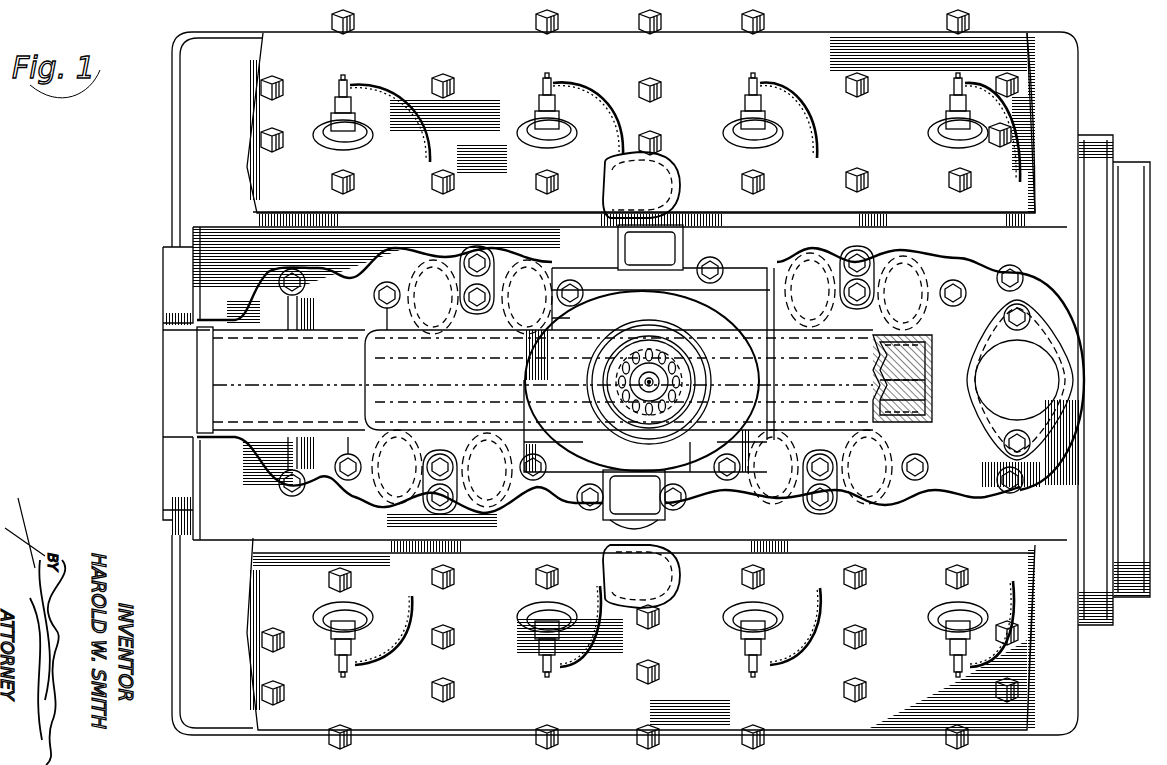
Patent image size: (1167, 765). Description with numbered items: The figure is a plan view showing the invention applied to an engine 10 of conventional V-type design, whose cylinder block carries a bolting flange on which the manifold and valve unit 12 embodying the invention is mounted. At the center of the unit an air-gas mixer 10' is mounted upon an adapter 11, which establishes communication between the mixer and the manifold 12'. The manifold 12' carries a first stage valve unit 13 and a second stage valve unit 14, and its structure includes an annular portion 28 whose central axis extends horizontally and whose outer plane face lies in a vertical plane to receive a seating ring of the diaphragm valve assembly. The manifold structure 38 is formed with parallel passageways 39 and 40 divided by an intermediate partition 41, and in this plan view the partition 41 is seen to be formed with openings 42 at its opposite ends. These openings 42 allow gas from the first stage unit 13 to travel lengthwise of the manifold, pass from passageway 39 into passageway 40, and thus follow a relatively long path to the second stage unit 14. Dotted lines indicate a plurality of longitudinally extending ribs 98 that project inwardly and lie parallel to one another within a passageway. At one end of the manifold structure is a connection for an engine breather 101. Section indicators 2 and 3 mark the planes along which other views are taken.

The internal combustion engine 10 is at (589, 179).
The manifold 12' is at (610, 374).
The adapter 11 is at (590, 265).
The first stage valve unit 13 is at (650, 236).
The air-gas mixer 10' is at (642, 381).
The ribs 98 is at (660, 350).
The annular portion 28 is at (778, 378).
The openings 42 is at (392, 383).
The section line 2 is at (190, 380).
The section line 3 is at (458, 536).
The second stage valve unit 14 is at (620, 513).
The manifold passageway 39 is at (898, 340).
The manifold structure 38 is at (954, 326).
The intermediate partition 41 is at (910, 382).
The manifold passageway 40 is at (910, 407).
The engine breather 101 is at (1060, 370).
The manifold and valve unit 12 is at (1044, 362).